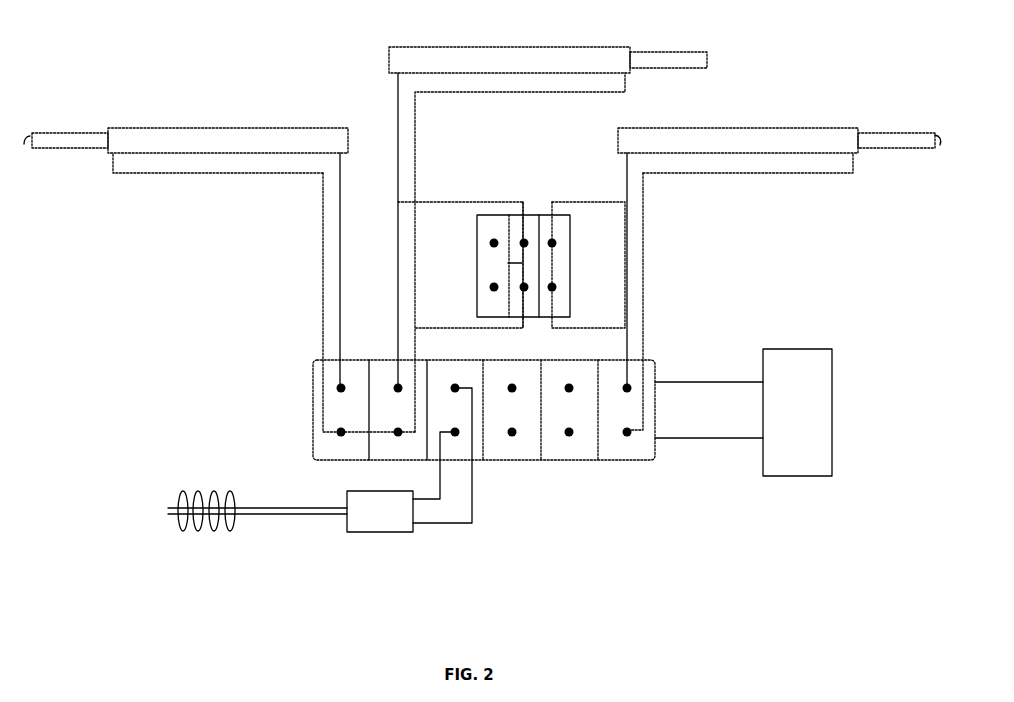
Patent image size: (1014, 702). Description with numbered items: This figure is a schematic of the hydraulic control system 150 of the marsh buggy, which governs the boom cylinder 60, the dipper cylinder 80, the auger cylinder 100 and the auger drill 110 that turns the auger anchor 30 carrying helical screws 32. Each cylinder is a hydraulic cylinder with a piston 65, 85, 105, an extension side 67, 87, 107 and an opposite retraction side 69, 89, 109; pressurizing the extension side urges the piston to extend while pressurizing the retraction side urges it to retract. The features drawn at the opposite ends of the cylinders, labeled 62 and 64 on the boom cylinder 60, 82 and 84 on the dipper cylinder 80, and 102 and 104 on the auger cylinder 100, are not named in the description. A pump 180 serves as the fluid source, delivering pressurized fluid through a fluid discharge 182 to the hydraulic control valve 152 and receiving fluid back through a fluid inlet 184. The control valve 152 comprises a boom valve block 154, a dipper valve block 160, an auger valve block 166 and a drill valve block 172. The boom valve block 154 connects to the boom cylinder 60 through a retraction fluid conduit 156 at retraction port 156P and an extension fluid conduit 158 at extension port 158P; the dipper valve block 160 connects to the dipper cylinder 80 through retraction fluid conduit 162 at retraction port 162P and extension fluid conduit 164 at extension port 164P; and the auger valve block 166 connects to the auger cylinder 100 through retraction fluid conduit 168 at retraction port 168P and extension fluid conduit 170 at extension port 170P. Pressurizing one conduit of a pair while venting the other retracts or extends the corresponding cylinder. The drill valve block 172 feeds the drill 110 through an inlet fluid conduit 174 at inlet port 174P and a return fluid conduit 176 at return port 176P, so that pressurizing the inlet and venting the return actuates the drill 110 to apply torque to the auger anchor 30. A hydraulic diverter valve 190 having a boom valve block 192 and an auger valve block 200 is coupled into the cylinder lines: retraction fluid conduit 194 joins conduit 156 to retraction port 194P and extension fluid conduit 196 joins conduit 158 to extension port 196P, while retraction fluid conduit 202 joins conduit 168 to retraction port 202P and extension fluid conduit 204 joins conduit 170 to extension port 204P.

The auger anchor 30 is at (295, 513).
The helical screws 32 is at (223, 530).
The boom cylinder 60 is at (729, 146).
The trace end 62 is at (940, 138).
The trace end portion 64 is at (618, 140).
The piston 65 is at (884, 145).
The extension side 67 is at (627, 153).
The retraction side 69 is at (856, 150).
The dipper cylinder 80 is at (225, 126).
The trace end 82 is at (25, 144).
The trace end portion 84 is at (349, 139).
The piston 85 is at (78, 142).
The extension side 87 is at (345, 153).
The retraction side 89 is at (113, 155).
The auger cylinder 100 is at (510, 63).
The trace end 102 is at (707, 59).
The trace end portion 104 is at (389, 62).
The piston 105 is at (658, 61).
The extension side 107 is at (398, 72).
The retraction side 109 is at (625, 73).
The auger drill 110 is at (380, 511).
The control system 150 is at (148, 290).
The hydraulic control valve 152 is at (623, 455).
The boom valve block 154 is at (613, 452).
The retraction fluid conduit 156 is at (645, 277).
The retraction port 156P is at (628, 436).
The extension fluid conduit 158 is at (645, 232).
The extension port 158P is at (630, 386).
The dipper valve block 160 is at (320, 412).
The retraction fluid conduit 162 is at (323, 218).
The retraction port 162P is at (338, 434).
The extension fluid conduit 164 is at (340, 278).
The extension port 164P is at (338, 388).
The auger valve block 166 is at (380, 445).
The retraction fluid conduit 168 is at (415, 118).
The retraction port 168P is at (398, 436).
The extension fluid conduit 170 is at (398, 105).
The extension port 170P is at (397, 386).
The drill valve block 172 is at (450, 448).
The inlet fluid conduit 174 is at (438, 505).
The inlet port 174P is at (458, 392).
The return fluid conduit 176 is at (472, 524).
The return port 176P is at (458, 436).
The fluid source 180 is at (797, 412).
The fluid discharge 182 is at (730, 381).
The fluid inlet 184 is at (730, 440).
The hydraulic diverter valve 190 is at (492, 268).
The boom valve block 192 is at (558, 262).
The retraction fluid conduit 194 is at (612, 330).
The retraction port 194P is at (555, 243).
The extension fluid conduit 196 is at (578, 201).
The extension port 196P is at (555, 287).
The auger valve block 200 is at (508, 263).
The retraction fluid conduit 202 is at (437, 330).
The retraction port 202P is at (524, 290).
The extension fluid conduit 204 is at (466, 201).
The extension port 204P is at (524, 240).